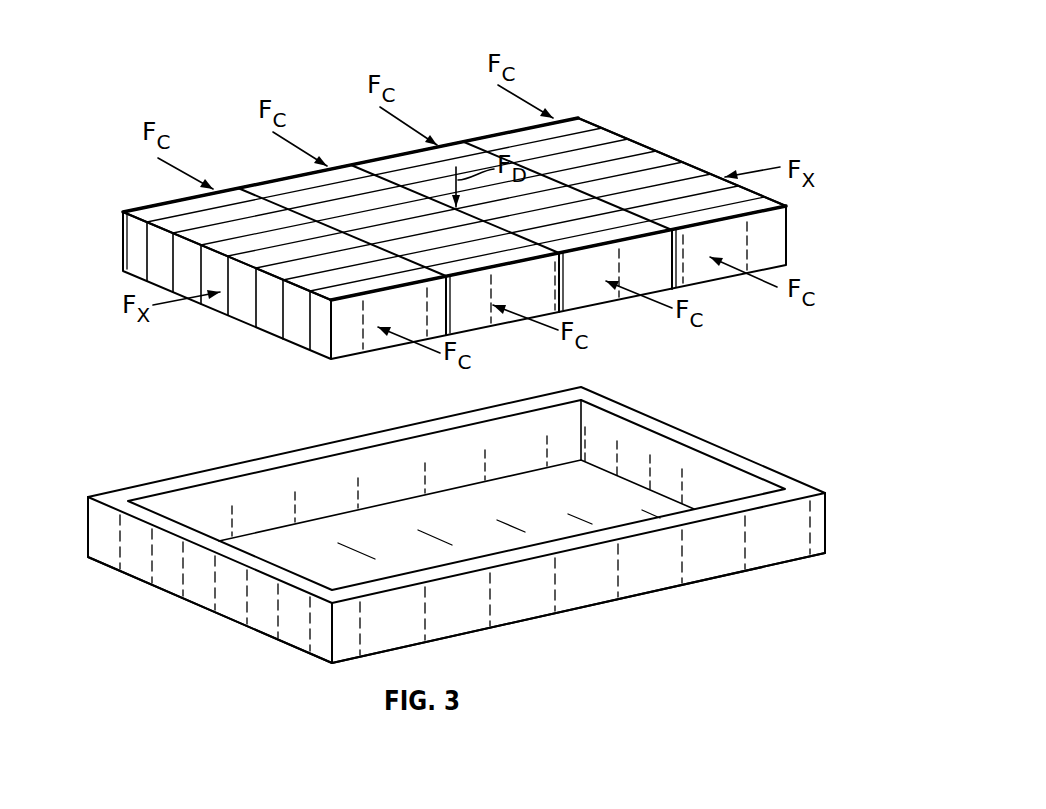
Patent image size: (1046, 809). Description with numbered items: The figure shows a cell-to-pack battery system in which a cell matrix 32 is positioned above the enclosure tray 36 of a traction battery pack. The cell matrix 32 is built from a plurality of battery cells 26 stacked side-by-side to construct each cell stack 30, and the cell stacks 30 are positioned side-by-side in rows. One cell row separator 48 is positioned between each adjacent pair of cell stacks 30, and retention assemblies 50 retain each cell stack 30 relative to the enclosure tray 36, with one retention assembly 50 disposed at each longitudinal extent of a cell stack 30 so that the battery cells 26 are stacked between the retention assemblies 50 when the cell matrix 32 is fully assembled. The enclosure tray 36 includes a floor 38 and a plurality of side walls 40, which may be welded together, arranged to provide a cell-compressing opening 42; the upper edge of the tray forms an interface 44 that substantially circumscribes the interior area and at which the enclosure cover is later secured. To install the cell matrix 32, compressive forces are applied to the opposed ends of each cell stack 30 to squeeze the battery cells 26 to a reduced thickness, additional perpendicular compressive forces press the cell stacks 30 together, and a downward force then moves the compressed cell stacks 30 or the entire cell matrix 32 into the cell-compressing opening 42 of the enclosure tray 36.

The battery cells 26 is at (610, 137).
The cell stack 30 is at (525, 117).
The cell matrix 32 is at (695, 104).
The enclosure tray 36 is at (732, 550).
The floor 38 is at (592, 492).
The side walls 40 is at (455, 622).
The cell-compressing opening 42 is at (615, 513).
The interface 44 is at (212, 543).
The cell row separator 48 is at (478, 147).
The retention assembly 50 is at (715, 270).